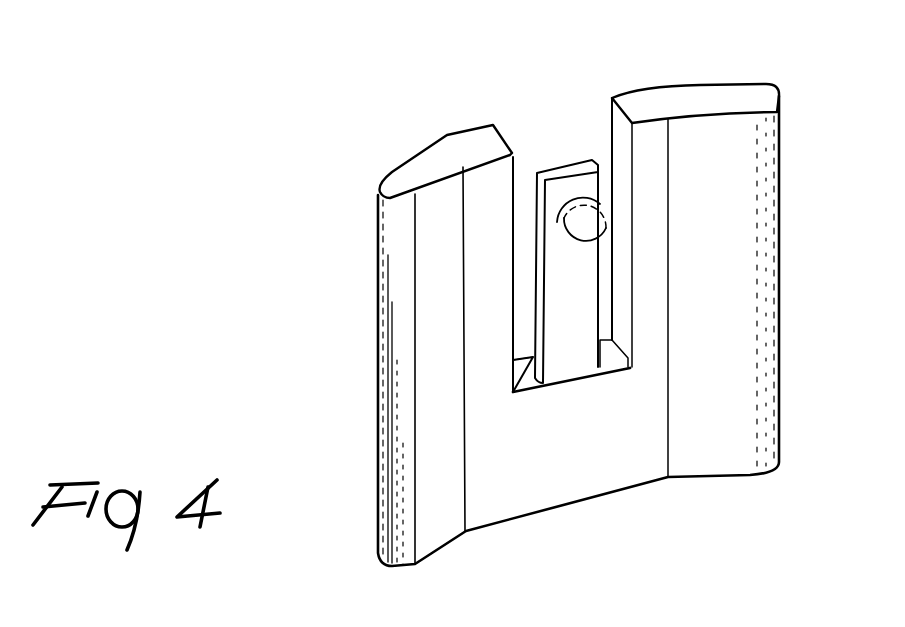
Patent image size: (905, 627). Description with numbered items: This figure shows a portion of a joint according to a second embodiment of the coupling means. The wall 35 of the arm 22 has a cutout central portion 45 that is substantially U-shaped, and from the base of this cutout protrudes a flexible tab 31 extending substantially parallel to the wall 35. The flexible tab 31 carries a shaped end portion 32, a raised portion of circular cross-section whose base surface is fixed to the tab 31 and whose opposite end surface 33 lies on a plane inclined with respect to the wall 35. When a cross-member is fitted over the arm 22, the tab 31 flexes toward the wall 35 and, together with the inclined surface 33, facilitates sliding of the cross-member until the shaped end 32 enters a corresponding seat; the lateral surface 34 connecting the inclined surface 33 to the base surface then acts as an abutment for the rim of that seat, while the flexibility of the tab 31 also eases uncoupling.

The arm 22 is at (788, 185).
The wall 35 is at (480, 172).
The cutout central portion 45 is at (528, 202).
The end portion 32 is at (567, 150).
The end surface 33 is at (594, 218).
The lateral surface 34 is at (557, 222).
The flexible tab 31 is at (568, 362).